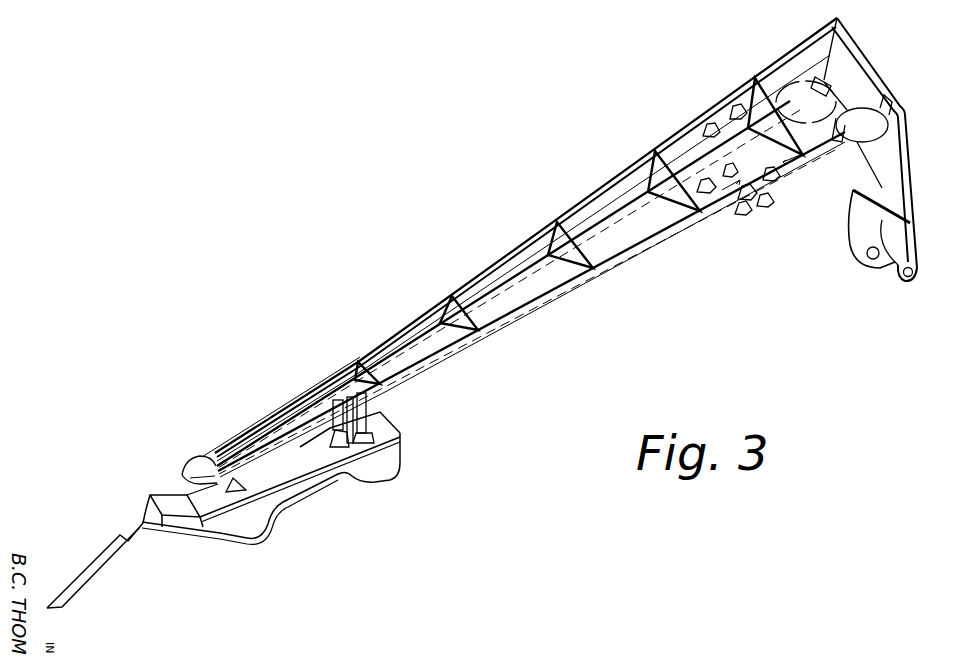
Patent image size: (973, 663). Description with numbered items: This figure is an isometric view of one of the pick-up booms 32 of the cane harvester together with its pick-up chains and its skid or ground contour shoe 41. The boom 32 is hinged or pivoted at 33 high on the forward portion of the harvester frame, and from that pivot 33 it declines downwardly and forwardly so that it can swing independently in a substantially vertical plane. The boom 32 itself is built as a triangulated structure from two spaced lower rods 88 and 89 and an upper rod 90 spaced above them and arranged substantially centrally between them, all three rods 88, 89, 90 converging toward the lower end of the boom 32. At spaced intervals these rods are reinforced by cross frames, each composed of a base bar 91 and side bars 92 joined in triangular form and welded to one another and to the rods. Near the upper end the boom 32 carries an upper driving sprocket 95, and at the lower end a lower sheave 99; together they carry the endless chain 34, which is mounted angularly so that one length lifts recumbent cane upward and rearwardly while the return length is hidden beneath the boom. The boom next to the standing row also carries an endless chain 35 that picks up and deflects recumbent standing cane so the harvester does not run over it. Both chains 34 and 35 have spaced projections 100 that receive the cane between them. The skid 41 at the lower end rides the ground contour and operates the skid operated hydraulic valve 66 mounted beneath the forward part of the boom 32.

The boom 32 is at (559, 247).
The pivot 33 is at (907, 277).
The endless chain 34 is at (705, 131).
The endless chain 35 is at (772, 176).
The skid 41 is at (257, 538).
The skid operated hydraulic valve 66 is at (333, 417).
The lower rod 88 is at (485, 277).
The lower rod 89 is at (535, 307).
The upper rod 90 is at (498, 283).
The base bar 91 is at (677, 203).
The side bar 92 is at (647, 170).
The upper driving sprocket 95 is at (805, 100).
The lower sheave 99 is at (217, 457).
The projection 100 is at (737, 88).